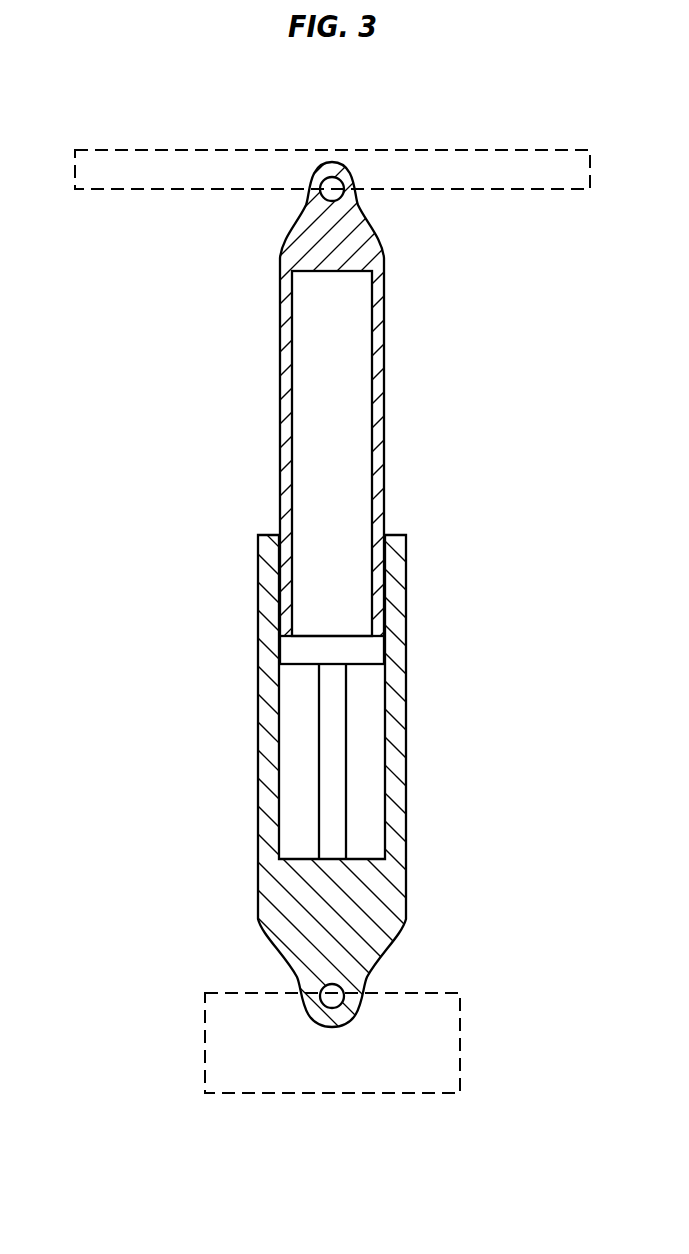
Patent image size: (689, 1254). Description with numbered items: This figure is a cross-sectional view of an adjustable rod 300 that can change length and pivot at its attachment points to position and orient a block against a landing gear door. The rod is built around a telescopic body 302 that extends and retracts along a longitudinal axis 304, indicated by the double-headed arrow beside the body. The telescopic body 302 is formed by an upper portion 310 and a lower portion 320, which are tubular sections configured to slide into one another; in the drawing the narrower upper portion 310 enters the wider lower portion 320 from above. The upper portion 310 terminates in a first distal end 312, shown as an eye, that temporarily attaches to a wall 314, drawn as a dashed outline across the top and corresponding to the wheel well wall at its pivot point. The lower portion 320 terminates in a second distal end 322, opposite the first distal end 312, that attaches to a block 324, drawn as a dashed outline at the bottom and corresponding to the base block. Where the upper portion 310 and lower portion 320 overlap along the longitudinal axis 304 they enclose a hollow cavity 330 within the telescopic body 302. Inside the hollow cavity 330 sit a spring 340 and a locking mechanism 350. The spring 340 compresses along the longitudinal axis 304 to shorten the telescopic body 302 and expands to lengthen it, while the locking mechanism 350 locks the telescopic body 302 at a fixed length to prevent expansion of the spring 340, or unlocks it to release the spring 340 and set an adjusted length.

The adjustable rod 300 is at (130, 859).
The telescopic body 302 is at (252, 508).
The longitudinal axis 304 is at (230, 549).
The upper portion 310 is at (386, 369).
The first distal end 312 is at (346, 190).
The wall 314 is at (103, 190).
The lower portion 320 is at (406, 655).
The second distal end 322 is at (352, 1003).
The block 324 is at (205, 1018).
The hollow cavity 330 is at (346, 493).
The spring 340 is at (333, 783).
The locking mechanism 350 is at (291, 651).